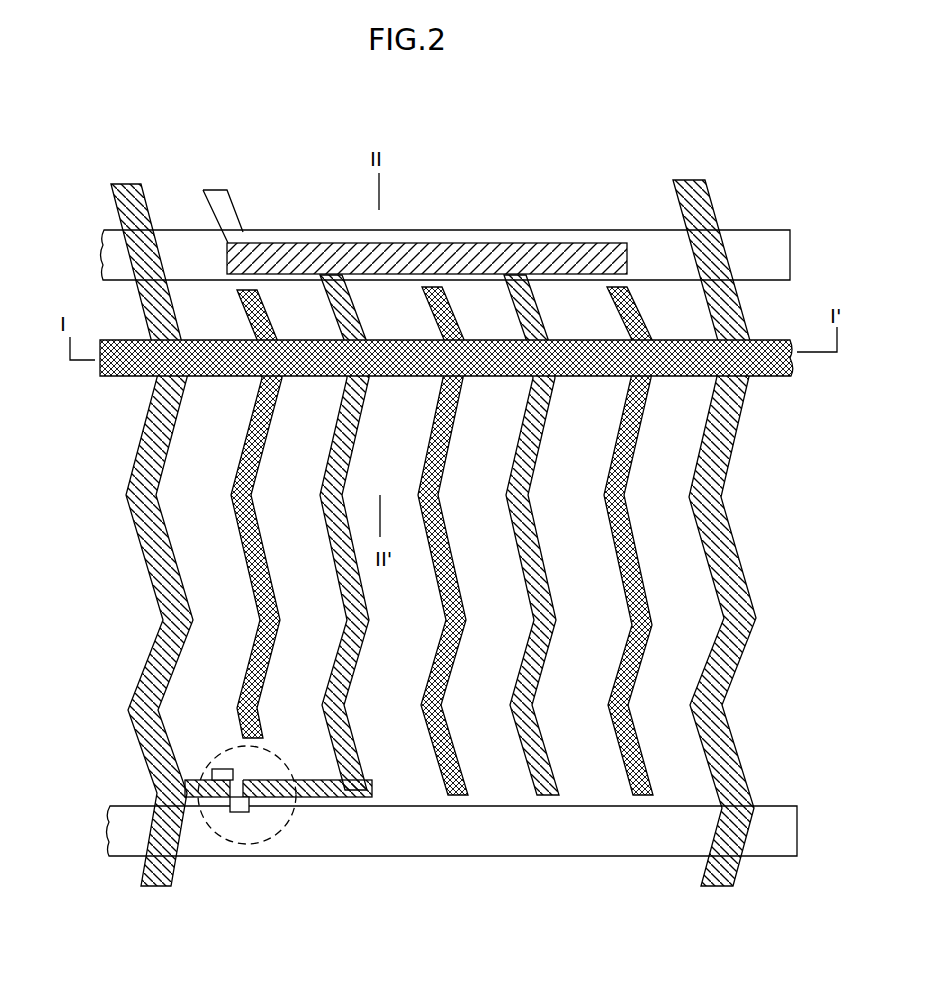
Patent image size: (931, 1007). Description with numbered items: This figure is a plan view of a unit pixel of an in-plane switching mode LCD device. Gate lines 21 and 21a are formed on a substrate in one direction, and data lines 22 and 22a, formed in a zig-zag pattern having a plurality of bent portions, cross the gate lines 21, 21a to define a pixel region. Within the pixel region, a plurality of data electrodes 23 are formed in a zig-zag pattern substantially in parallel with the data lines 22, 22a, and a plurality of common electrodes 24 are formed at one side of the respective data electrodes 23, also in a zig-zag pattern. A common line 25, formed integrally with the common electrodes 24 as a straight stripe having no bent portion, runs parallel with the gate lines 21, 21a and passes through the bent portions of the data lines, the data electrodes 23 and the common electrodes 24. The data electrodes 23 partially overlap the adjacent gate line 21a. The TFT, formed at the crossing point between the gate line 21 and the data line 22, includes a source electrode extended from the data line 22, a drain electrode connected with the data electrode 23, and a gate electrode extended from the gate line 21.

The gate line 21 is at (799, 805).
The gate line 21a is at (791, 229).
The data line 22 is at (153, 890).
The data line 22a is at (717, 888).
The data electrode 23 is at (532, 640).
The common electrode 24 is at (444, 530).
The common line 25 is at (772, 338).
The thin film transistor TFT is at (273, 828).